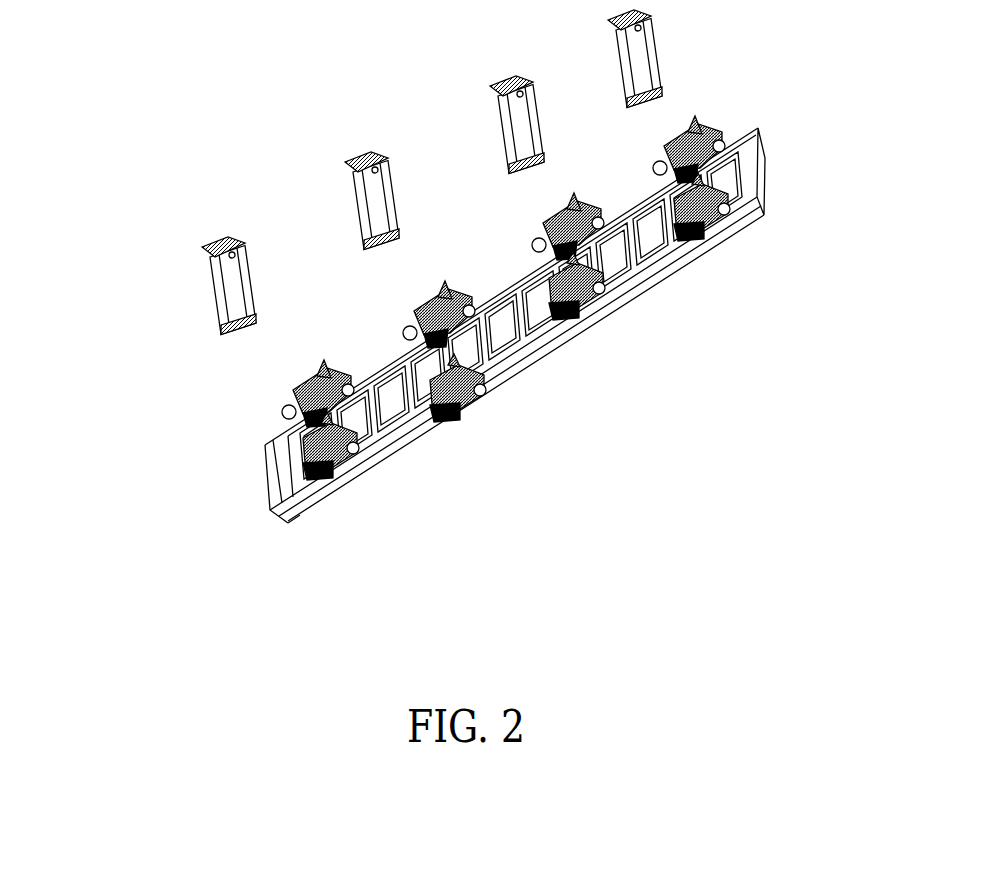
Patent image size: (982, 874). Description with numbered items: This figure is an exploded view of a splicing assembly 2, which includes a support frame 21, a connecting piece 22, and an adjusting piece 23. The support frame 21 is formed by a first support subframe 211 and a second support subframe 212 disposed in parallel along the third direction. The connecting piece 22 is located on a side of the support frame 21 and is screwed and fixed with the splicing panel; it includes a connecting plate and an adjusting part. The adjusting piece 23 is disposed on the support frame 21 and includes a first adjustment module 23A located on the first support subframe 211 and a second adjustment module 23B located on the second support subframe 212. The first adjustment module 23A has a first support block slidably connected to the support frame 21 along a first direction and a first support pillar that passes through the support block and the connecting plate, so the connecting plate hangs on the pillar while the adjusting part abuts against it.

The splicing assembly 2 is at (98, 224).
The support frame 21 is at (549, 389).
The first support subframe 211 is at (760, 134).
The second support subframe 212 is at (265, 519).
The connecting piece 22 is at (200, 283).
The adjusting piece 23 is at (436, 332).
The first adjustment module 23A is at (270, 421).
The second adjustment module 23B is at (372, 437).